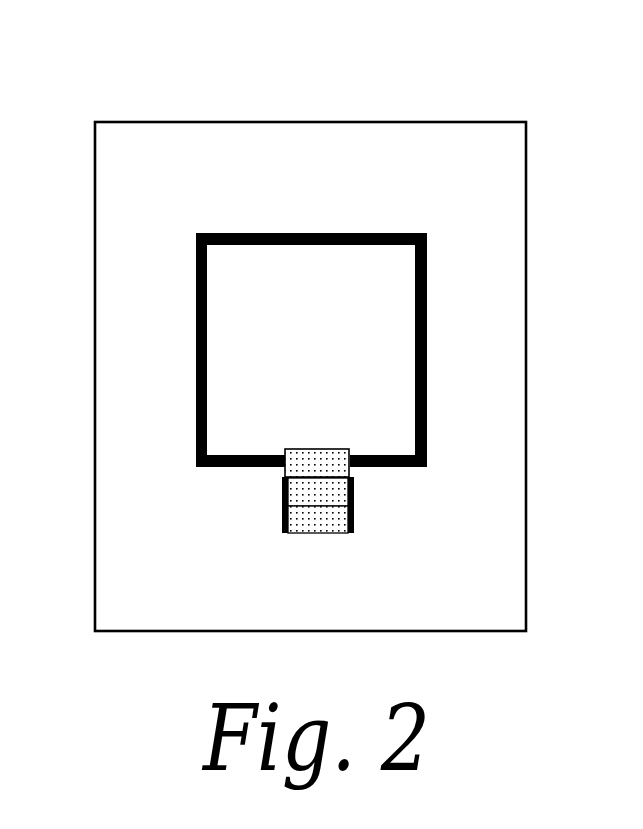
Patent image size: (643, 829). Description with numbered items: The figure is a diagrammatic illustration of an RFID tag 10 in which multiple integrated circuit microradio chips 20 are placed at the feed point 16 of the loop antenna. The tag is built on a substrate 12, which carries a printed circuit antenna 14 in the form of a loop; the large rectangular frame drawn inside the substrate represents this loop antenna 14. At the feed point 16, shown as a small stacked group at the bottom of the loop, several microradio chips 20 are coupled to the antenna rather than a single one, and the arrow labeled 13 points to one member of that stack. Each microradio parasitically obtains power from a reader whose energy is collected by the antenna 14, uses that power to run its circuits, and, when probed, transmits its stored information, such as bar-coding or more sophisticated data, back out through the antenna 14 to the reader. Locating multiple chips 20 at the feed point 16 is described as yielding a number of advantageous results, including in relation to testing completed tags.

The RFID tag 10 is at (374, 119).
The substrate 12 is at (465, 187).
The chip 13 is at (322, 529).
The printed circuit antenna 14 is at (427, 375).
The feed point 16 is at (366, 492).
The integrated circuit microradio chips 20 is at (317, 493).